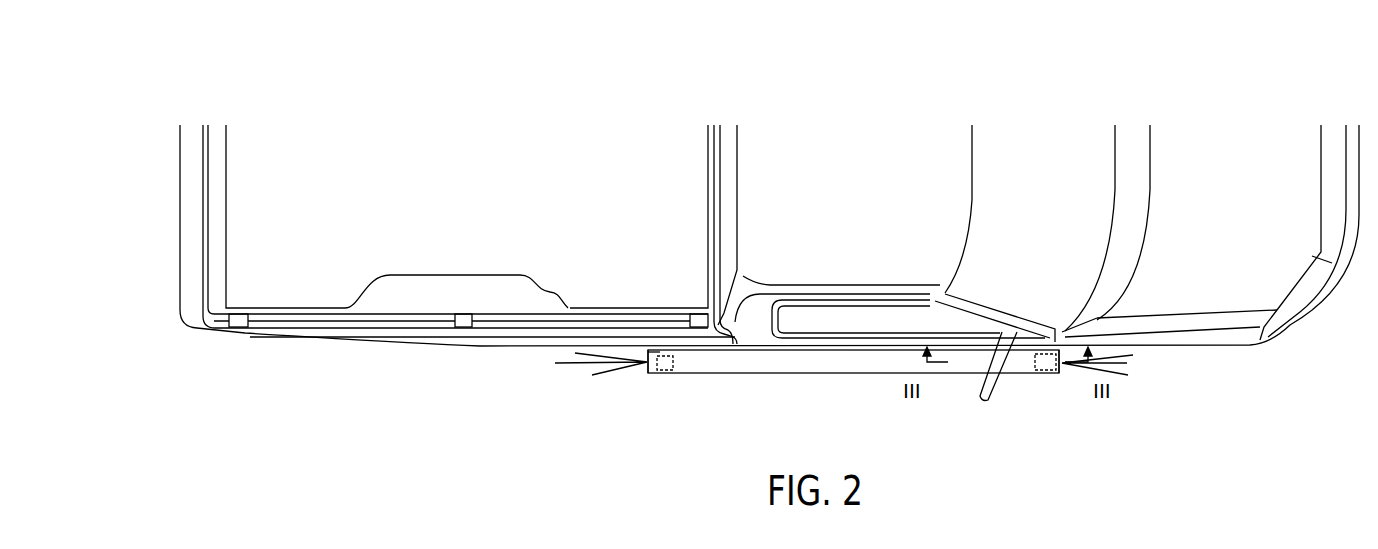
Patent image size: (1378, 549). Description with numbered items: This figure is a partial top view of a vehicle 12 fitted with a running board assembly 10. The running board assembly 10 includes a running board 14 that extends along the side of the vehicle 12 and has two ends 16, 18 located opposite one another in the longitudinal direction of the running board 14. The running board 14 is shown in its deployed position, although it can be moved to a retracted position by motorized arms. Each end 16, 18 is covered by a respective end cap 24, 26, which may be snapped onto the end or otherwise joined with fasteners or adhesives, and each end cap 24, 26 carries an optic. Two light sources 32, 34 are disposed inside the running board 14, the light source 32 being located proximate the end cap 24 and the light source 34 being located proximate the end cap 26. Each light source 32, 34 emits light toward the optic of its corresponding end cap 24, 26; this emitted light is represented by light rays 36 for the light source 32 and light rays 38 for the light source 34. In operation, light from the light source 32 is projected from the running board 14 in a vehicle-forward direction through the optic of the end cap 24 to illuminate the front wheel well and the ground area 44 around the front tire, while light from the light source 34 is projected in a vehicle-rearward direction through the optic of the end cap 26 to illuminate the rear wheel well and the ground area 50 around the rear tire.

The running board assembly 10 is at (652, 453).
The vehicle 12 is at (637, 93).
The running board 14 is at (842, 373).
The end 16 is at (1050, 373).
The end 18 is at (652, 373).
The end cap 24 is at (1058, 373).
The end cap 26 is at (647, 373).
The light source 32 is at (1032, 373).
The light source 34 is at (677, 375).
The light rays 36 is at (1140, 365).
The light rays 38 is at (580, 363).
The ground area 44 is at (1201, 383).
The ground area 50 is at (472, 388).